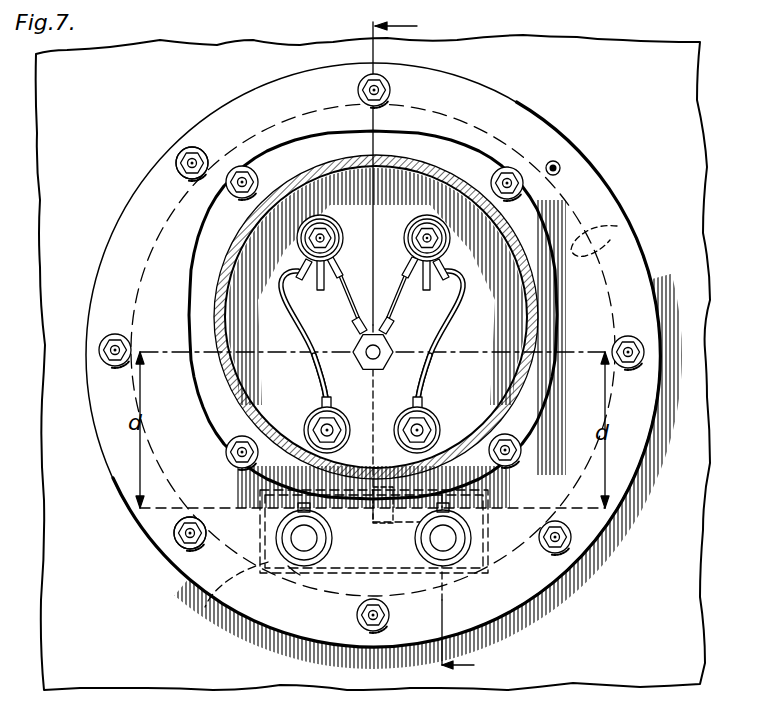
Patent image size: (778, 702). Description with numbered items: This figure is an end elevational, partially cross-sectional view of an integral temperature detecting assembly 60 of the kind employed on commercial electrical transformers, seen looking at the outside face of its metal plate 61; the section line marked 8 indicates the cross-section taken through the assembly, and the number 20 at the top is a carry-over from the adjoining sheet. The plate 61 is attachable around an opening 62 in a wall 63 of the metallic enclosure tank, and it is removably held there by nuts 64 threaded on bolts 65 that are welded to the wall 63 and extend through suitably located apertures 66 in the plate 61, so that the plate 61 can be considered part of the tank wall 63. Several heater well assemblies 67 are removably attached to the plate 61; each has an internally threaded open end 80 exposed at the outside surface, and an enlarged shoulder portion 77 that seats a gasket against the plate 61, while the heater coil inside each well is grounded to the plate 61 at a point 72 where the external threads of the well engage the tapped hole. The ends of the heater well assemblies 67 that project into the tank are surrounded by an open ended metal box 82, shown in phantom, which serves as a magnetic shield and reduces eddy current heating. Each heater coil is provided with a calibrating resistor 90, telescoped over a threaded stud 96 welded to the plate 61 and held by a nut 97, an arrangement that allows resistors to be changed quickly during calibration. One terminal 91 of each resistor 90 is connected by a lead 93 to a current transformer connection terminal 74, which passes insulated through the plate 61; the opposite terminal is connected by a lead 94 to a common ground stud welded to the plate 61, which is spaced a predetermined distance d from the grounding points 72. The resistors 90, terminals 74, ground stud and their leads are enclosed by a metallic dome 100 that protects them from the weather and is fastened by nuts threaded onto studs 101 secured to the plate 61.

The section line 8- 8 is at (434, 348).
The apparatus 20 is at (504, 9).
The integral temperature detecting assembly 60 is at (653, 477).
The metal plate 61 is at (513, 106).
The opening 62 is at (588, 233).
The wall 63 is at (627, 634).
The nuts 64 is at (196, 148).
The bolts 65 is at (190, 163).
The apertures 66 is at (559, 165).
The heater well assemblies 67 is at (277, 529).
The grounding point 72 is at (419, 520).
The current transformer connection terminal 74 is at (340, 410).
The enlarged shoulder portion 77 is at (288, 565).
The internally threaded open end 80 is at (487, 560).
The open ended metal box 82 is at (207, 606).
The calibrating resistor 90 is at (403, 226).
The resistor terminal 91 is at (295, 262).
The lead 93 is at (323, 376).
The lead 94 is at (347, 297).
The threaded studs 96 is at (450, 233).
The nuts 97 is at (404, 246).
The metallic dome 100 is at (512, 227).
The studs 101 is at (533, 170).